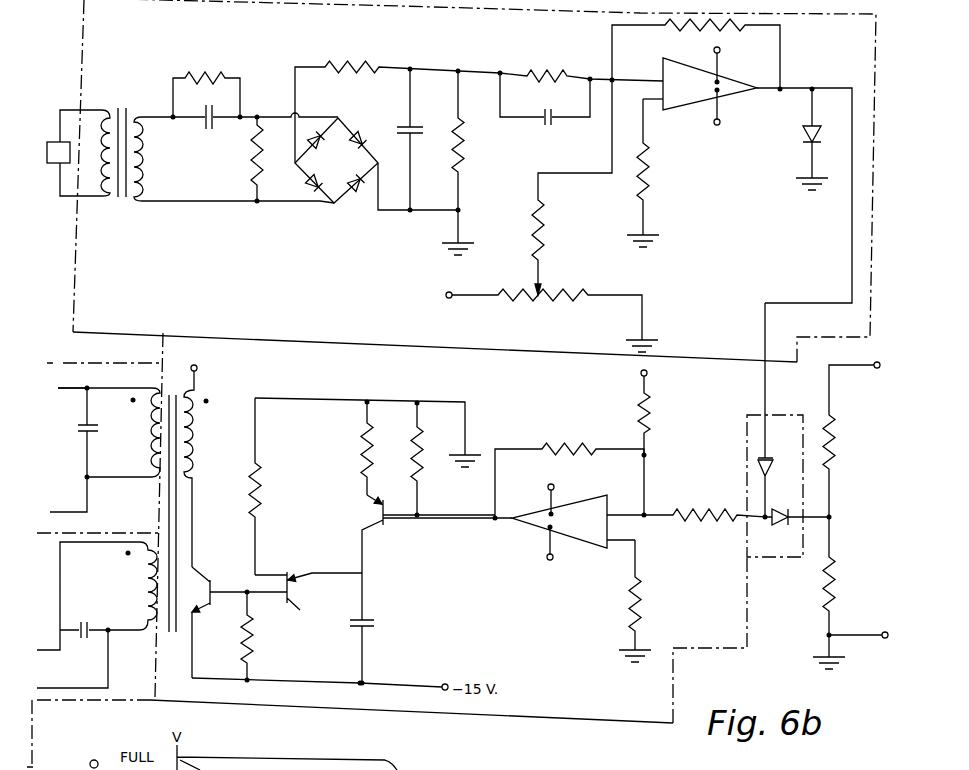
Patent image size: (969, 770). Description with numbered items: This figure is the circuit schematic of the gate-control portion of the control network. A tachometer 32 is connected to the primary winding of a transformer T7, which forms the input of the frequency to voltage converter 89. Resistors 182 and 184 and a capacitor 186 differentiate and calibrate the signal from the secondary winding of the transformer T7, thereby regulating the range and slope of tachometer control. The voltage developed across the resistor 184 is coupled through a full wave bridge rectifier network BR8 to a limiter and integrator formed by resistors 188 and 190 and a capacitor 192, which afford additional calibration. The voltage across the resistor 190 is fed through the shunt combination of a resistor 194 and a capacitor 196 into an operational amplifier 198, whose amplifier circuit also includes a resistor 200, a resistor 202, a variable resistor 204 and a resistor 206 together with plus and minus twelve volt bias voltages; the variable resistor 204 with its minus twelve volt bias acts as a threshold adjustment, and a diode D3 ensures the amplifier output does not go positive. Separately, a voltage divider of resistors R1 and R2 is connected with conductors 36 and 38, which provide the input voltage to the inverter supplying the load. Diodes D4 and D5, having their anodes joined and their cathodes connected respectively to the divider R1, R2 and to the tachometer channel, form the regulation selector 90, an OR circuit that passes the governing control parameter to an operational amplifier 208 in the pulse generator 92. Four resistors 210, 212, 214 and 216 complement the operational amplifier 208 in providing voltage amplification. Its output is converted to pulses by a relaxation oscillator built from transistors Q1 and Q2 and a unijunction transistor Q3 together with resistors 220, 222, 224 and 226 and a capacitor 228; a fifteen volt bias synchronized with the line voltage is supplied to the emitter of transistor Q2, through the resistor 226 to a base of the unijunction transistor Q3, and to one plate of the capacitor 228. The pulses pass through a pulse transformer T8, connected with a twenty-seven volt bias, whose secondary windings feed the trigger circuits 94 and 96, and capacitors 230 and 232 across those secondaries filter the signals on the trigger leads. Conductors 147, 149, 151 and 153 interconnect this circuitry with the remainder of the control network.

The tachometer 32 is at (52, 166).
The conductor 36 is at (864, 370).
The conductor 38 is at (863, 617).
The frequency to voltage converter 89 is at (95, 333).
The regulation selector 90 is at (781, 395).
The pulse generator 92 is at (513, 715).
The trigger circuit 94 is at (100, 362).
The trigger circuit 96 is at (150, 690).
The conductor 147 is at (78, 390).
The conductor 149 is at (78, 496).
The conductor 151 is at (42, 652).
The conductor 153 is at (43, 698).
The resistor 182 is at (218, 76).
The resistor 184 is at (252, 165).
The capacitor 186 is at (214, 124).
The resistor 188 is at (355, 66).
The resistor 190 is at (463, 152).
The capacitor 192 is at (412, 123).
The resistor 194 is at (548, 68).
The capacitor 196 is at (546, 126).
The operational amplifier 198 is at (670, 103).
The resistor 200 is at (677, 33).
The resistor 202 is at (648, 170).
The variable resistor 204 is at (552, 302).
The resistor 206 is at (542, 234).
The operational amplifier 208 is at (578, 541).
The resistor 210 is at (650, 410).
The resistor 212 is at (548, 449).
The resistor 214 is at (720, 512).
The resistor 216 is at (640, 600).
The resistor 220 is at (421, 466).
The resistor 222 is at (363, 456).
The resistor 224 is at (262, 493).
The resistor 226 is at (251, 645).
The capacitor 228 is at (372, 614).
The capacitor 230 is at (90, 434).
The capacitor 232 is at (98, 607).
The transformer T7 is at (158, 145).
The pulse transformer T8 is at (173, 510).
The transistor Q1 is at (372, 503).
The transistor Q2 is at (209, 580).
The unijunction transistor Q3 is at (308, 601).
The diode D3 is at (800, 132).
The diode D4 is at (784, 455).
The diode D5 is at (782, 528).
The resistor R1 is at (838, 447).
The resistor R2 is at (836, 585).
The full wave bridge rectifier network BR8 is at (348, 206).